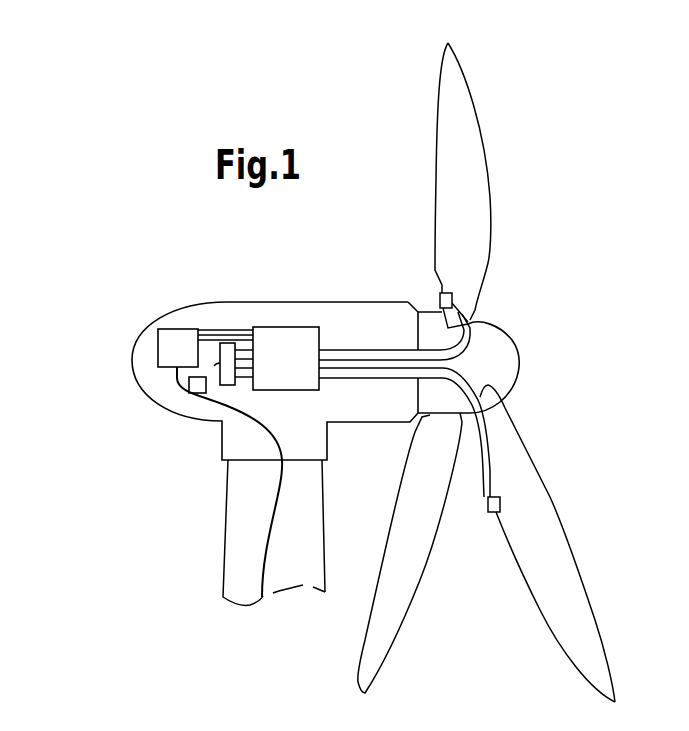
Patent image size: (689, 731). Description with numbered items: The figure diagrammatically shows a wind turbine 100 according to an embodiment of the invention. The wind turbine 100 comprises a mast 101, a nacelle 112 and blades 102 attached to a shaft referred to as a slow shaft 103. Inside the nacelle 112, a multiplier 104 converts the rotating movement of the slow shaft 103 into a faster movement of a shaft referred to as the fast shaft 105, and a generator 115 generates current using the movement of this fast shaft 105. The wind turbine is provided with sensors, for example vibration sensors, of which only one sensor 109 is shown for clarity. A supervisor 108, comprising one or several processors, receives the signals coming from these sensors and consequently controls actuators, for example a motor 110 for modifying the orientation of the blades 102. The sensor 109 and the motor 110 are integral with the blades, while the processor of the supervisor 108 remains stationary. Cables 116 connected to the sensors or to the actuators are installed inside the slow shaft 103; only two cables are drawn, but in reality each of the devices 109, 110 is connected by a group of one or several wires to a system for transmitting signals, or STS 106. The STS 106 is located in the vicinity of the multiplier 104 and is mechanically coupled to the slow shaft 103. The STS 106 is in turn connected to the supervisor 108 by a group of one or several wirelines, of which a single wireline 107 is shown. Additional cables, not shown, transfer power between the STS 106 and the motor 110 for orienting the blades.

The wind turbine 100 is at (128, 249).
The mast 101 is at (228, 538).
The blades 102 is at (550, 600).
The slow shaft 103 is at (388, 350).
The multiplier 104 is at (304, 372).
The fast shaft 105 is at (217, 330).
The system for transmitting signals (STS) 106 is at (229, 386).
The wireline 107 is at (214, 366).
The supervisor 108 is at (189, 385).
The sensor 109 is at (488, 503).
The motor 110 is at (440, 301).
The nacelle 112 is at (131, 387).
The generator 115 is at (157, 345).
The cables 116 is at (353, 380).